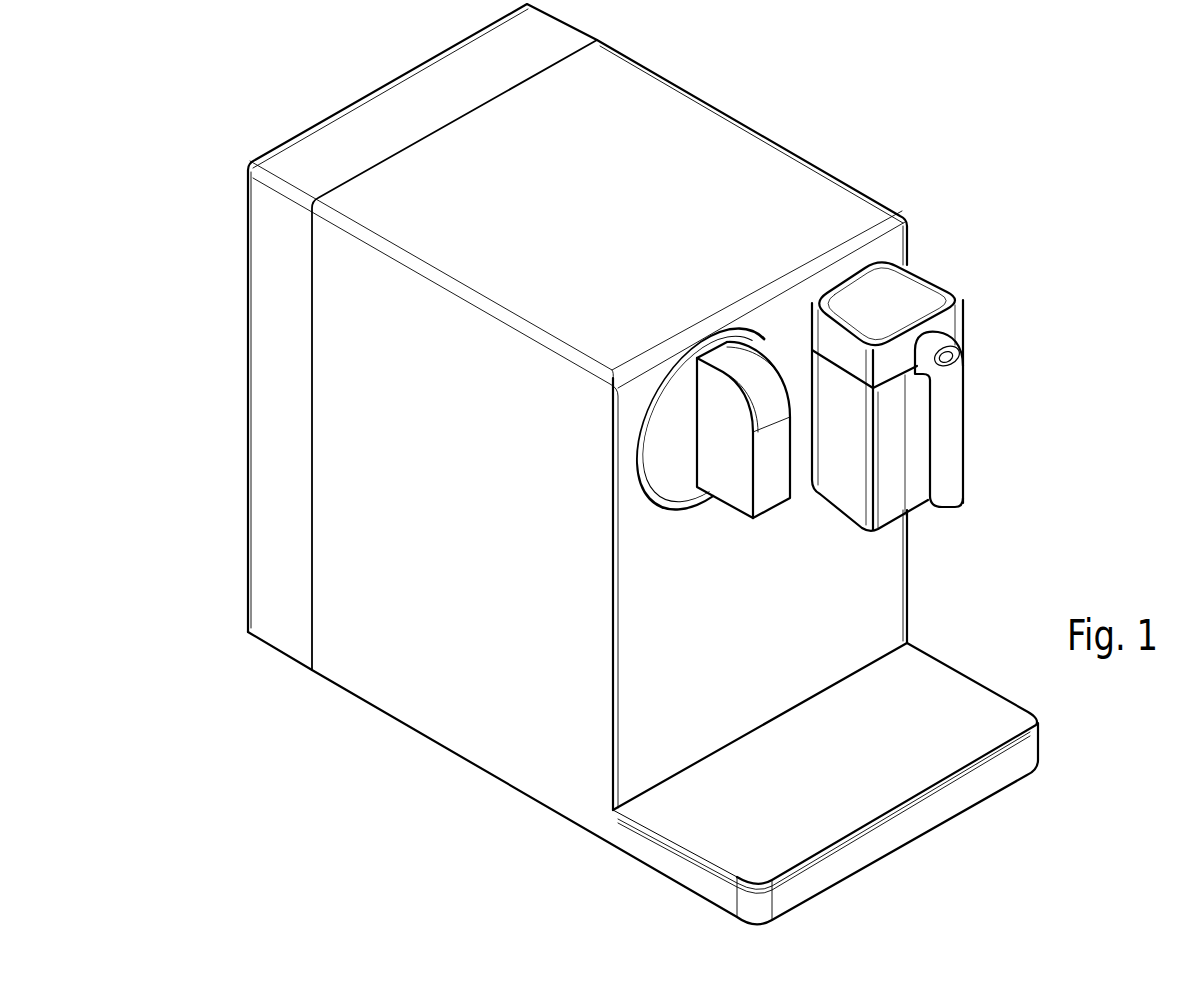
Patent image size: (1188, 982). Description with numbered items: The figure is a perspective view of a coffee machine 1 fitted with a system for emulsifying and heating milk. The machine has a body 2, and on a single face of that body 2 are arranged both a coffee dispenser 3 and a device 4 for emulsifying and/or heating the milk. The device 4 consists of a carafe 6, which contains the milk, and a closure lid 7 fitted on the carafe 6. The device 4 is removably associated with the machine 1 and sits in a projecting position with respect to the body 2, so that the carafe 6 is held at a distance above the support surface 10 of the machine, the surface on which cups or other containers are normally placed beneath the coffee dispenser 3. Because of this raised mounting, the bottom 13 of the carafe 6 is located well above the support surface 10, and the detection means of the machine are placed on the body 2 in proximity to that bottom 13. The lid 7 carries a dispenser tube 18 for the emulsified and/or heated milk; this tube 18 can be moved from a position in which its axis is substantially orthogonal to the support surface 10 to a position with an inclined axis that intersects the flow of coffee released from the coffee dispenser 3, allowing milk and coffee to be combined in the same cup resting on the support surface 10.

The coffee machine 1 is at (673, 464).
The body 2 is at (722, 155).
The coffee dispenser 3 is at (735, 462).
The device for emulsifying and/or heating the milk 4 is at (950, 428).
The carafe 6 is at (850, 472).
The closure lid 7 is at (900, 293).
The support surface 10 is at (843, 763).
The bottom of the carafe 13 is at (917, 522).
The dispenser tube 18 is at (949, 438).